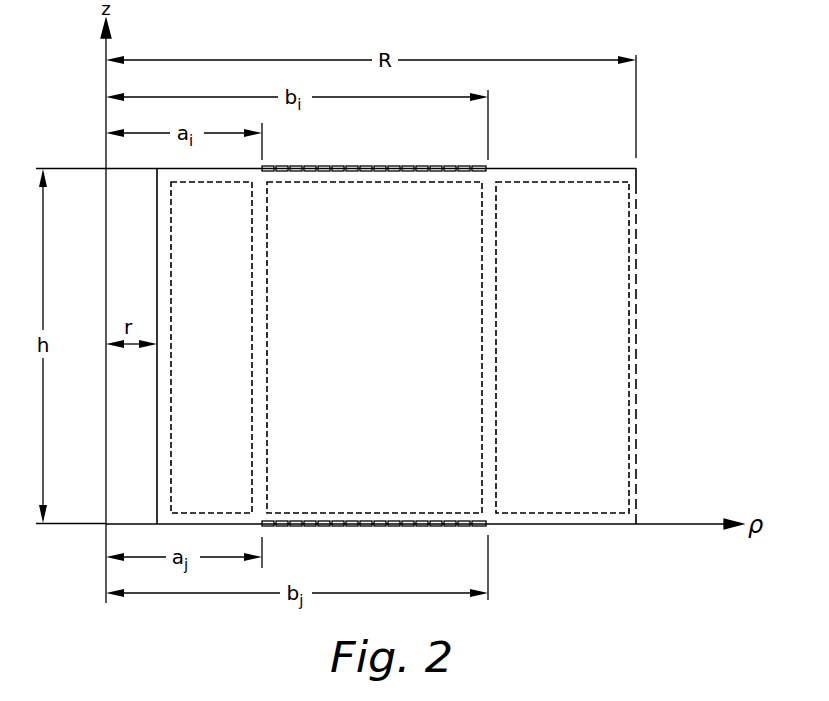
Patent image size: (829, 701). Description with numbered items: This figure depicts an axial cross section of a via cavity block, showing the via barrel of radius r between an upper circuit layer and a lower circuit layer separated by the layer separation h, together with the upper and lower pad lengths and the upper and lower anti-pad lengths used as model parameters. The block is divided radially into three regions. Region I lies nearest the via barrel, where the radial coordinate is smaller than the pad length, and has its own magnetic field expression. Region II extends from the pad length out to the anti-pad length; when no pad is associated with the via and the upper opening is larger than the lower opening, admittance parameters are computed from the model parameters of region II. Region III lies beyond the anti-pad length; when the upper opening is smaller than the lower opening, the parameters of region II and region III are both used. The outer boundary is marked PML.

The region I is at (211, 347).
The region II is at (374, 347).
The region III is at (562, 347).
The perfectly matched layer PML is at (655, 354).